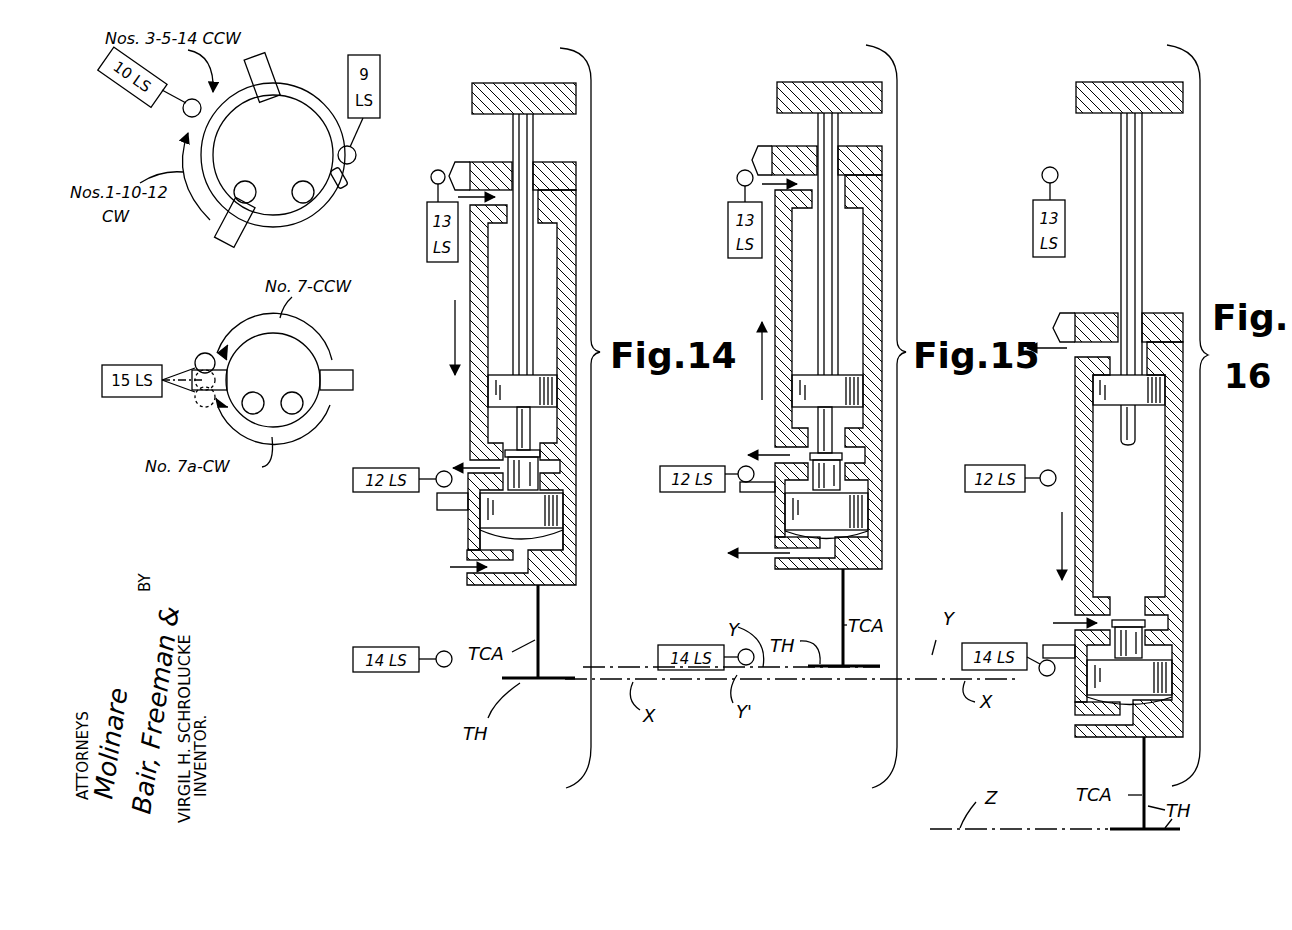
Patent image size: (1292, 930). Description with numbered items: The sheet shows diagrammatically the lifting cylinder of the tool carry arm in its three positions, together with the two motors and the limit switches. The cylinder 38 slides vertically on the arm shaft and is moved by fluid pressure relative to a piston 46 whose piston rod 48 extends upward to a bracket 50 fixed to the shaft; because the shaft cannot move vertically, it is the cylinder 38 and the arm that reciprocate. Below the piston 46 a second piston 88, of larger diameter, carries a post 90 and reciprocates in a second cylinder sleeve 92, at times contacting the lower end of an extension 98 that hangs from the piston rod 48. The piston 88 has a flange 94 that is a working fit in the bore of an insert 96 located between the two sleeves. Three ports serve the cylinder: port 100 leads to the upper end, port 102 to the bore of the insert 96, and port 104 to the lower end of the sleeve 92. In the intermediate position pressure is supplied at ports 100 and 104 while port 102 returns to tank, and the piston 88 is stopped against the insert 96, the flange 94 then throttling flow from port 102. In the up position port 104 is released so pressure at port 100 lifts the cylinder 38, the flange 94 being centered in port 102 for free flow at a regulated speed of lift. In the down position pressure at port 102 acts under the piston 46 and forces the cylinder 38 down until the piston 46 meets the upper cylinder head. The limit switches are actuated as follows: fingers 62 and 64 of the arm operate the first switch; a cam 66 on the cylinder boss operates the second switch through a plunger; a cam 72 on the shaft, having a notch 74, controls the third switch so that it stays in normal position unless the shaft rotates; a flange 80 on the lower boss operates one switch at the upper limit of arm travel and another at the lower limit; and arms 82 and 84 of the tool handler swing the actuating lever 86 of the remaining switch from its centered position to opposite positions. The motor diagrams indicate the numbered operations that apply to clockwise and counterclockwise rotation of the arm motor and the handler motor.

In FIG. 14, the cylinder 38 is at (470, 290).
In FIG. 15, the cylinder 38 is at (782, 298).
In FIG. 16, the cylinder 38 is at (1122, 539).
In FIG. 14, the piston 46 is at (500, 388).
In FIG. 15, the piston 46 is at (838, 390).
In FIG. 16, the piston 46 is at (1115, 388).
In FIG. 14, the piston rod 48 is at (532, 255).
In FIG. 15, the piston rod 48 is at (826, 258).
In FIG. 16, the piston rod 48 is at (1142, 240).
In FIG. 14, the bracket 50 is at (508, 83).
In FIG. 15, the bracket 50 is at (830, 82).
In FIG. 16, the bracket 50 is at (1140, 82).
In FIG. 14, the finger 62 is at (228, 238).
In FIG. 14, the finger 64 is at (262, 68).
In FIG. 14, the cam 66 is at (455, 168).
In FIG. 15, the cam 66 is at (762, 150).
In FIG. 16, the cam 66 is at (1065, 322).
In FIG. 14, the cam 72 is at (297, 90).
In FIG. 14, the notch 74 is at (345, 186).
In FIG. 14, the flange 80 is at (440, 510).
In FIG. 15, the flange 80 is at (745, 494).
In FIG. 16, the flange 80 is at (1045, 645).
In FIG. 14, the arm 82 is at (195, 392).
In FIG. 14, the arm 84 is at (340, 370).
In FIG. 14, the limit switch actuating lever 86 is at (185, 365).
In FIG. 14, the second piston 88 is at (540, 510).
In FIG. 15, the second piston 88 is at (850, 510).
In FIG. 16, the second piston 88 is at (1150, 676).
In FIG. 14, the post 90 is at (525, 475).
In FIG. 15, the post 90 is at (860, 468).
In FIG. 16, the post 90 is at (1170, 625).
In FIG. 14, the second cylinder sleeve 92 is at (485, 540).
In FIG. 14, the flange 94 is at (540, 445).
In FIG. 14, the insert 96 is at (560, 478).
In FIG. 15, the insert 96 is at (866, 476).
In FIG. 16, the insert 96 is at (1168, 641).
In FIG. 14, the extension 98 is at (520, 428).
In FIG. 15, the extension 98 is at (832, 420).
In FIG. 16, the extension 98 is at (1136, 428).
In FIG. 14, the port 100 is at (500, 190).
In FIG. 15, the port 100 is at (803, 175).
In FIG. 16, the port 100 is at (1103, 357).
In FIG. 14, the port 102 is at (470, 470).
In FIG. 15, the port 102 is at (797, 455).
In FIG. 16, the port 102 is at (1103, 620).
In FIG. 14, the port 104 is at (500, 565).
In FIG. 15, the port 104 is at (807, 572).
In FIG. 16, the port 104 is at (1105, 722).